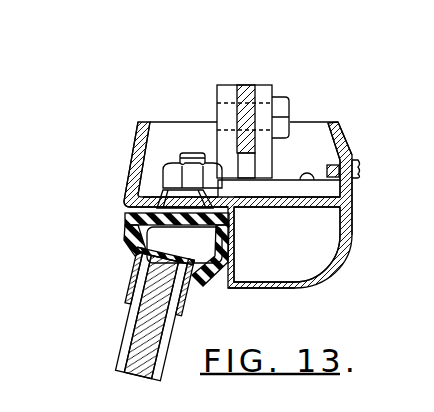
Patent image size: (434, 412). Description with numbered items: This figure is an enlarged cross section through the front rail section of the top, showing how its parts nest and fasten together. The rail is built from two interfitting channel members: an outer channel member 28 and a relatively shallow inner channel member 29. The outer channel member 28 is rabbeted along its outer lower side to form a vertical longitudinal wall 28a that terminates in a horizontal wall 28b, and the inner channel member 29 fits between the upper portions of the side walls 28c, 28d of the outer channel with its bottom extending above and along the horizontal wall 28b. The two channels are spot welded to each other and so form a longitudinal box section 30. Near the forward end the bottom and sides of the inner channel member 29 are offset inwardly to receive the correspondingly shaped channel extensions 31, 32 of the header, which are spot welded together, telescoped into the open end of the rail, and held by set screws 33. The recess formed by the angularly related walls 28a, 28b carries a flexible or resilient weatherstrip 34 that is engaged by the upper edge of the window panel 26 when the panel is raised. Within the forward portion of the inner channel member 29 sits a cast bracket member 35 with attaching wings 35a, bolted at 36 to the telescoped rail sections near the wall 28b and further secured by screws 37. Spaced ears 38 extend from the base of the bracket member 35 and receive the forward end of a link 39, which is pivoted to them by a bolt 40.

The window panel 26 is at (129, 312).
The outer channel member 28 is at (351, 258).
The vertical longitudinal wall 28a is at (237, 239).
The horizontal wall 28b is at (126, 216).
The side wall 28c is at (127, 152).
The side wall 28d is at (341, 128).
The inner channel member 29 is at (138, 142).
The longitudinal box section 30 is at (336, 233).
The channel extension 31 is at (283, 279).
The channel extension 32 is at (289, 205).
The set screws 33 is at (362, 174).
The weatherstrip 34 is at (226, 283).
The bracket member 35 is at (293, 176).
The attaching wings 35a is at (221, 196).
The bolt 36 is at (187, 158).
The screws 37 is at (337, 150).
The spaced ears 38 is at (257, 86).
The link 39 is at (250, 110).
The bolt 40 is at (289, 105).